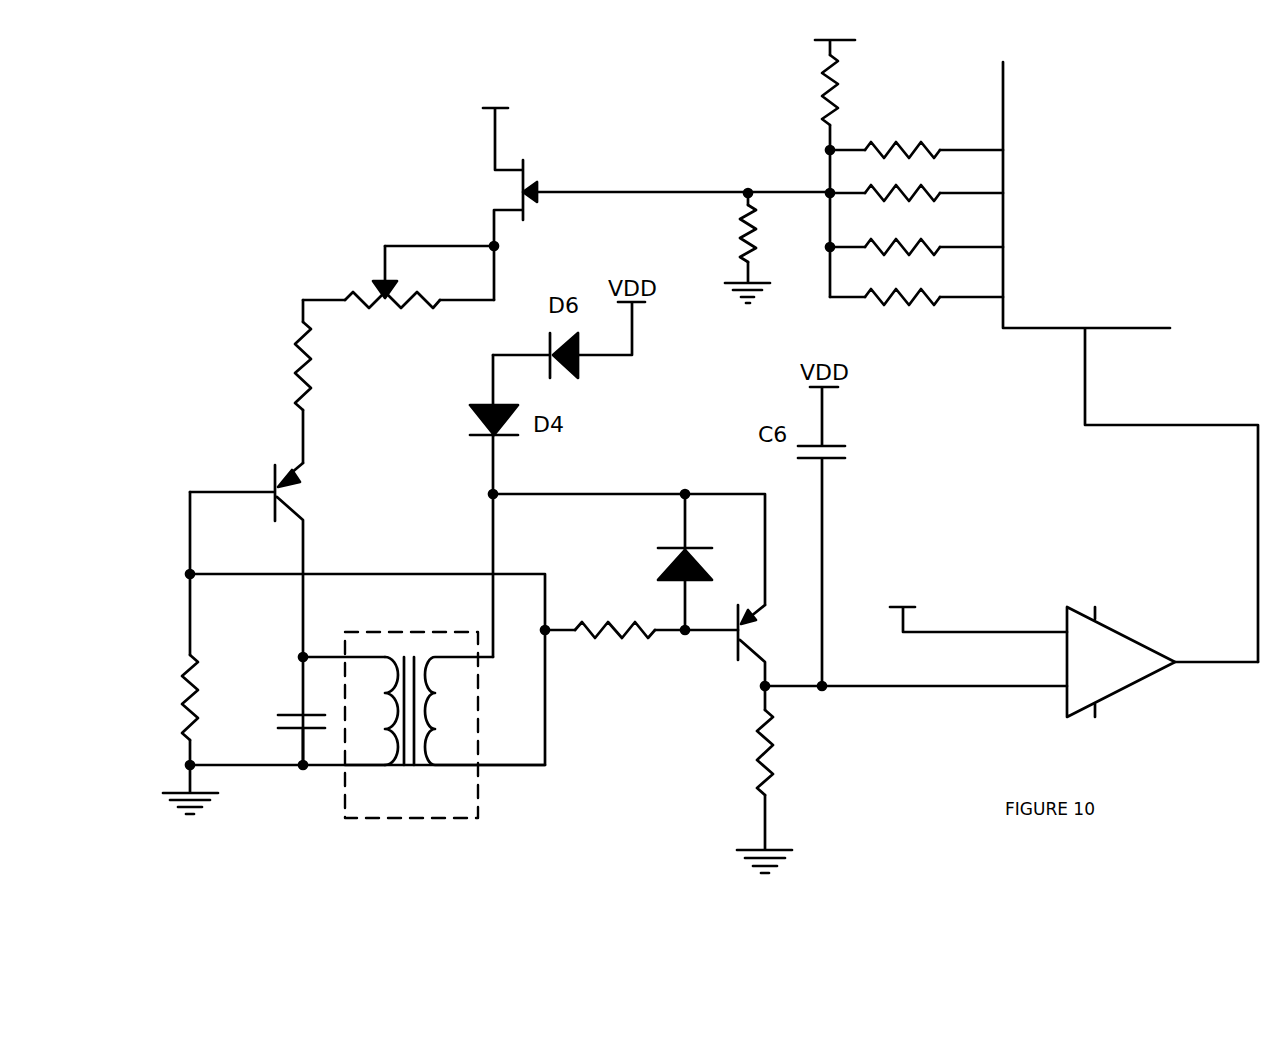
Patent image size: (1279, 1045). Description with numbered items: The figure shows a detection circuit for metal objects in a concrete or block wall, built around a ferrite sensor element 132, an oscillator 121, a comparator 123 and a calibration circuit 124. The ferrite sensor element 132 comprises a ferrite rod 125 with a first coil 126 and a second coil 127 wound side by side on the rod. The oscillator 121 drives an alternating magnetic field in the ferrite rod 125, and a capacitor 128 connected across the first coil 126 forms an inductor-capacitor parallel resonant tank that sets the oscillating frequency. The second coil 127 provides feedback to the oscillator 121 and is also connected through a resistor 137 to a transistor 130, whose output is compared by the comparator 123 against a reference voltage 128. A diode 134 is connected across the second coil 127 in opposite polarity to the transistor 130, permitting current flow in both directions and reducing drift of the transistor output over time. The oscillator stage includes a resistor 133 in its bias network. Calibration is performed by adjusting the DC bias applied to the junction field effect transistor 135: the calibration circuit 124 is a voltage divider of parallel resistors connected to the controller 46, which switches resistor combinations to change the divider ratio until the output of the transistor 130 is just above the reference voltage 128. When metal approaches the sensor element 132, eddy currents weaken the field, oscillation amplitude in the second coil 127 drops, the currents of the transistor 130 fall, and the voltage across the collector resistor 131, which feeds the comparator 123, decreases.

The oscillator 121 is at (185, 438).
The comparator 123 is at (1108, 645).
The calibration circuit 124 is at (755, 132).
The ferrite rod 125 is at (408, 753).
The first coil 126 is at (377, 707).
The second coil 127 is at (435, 712).
The capacitor 128 is at (288, 727).
The transistor 130 is at (752, 617).
The collector resistor 131 is at (770, 757).
The ferrite sensor element 132 is at (460, 787).
The resistor 133 is at (183, 713).
The diode 134 is at (690, 547).
The junction field effect transistor 135 is at (524, 168).
The resistor 137 is at (605, 634).
The controller 46 is at (1130, 362).